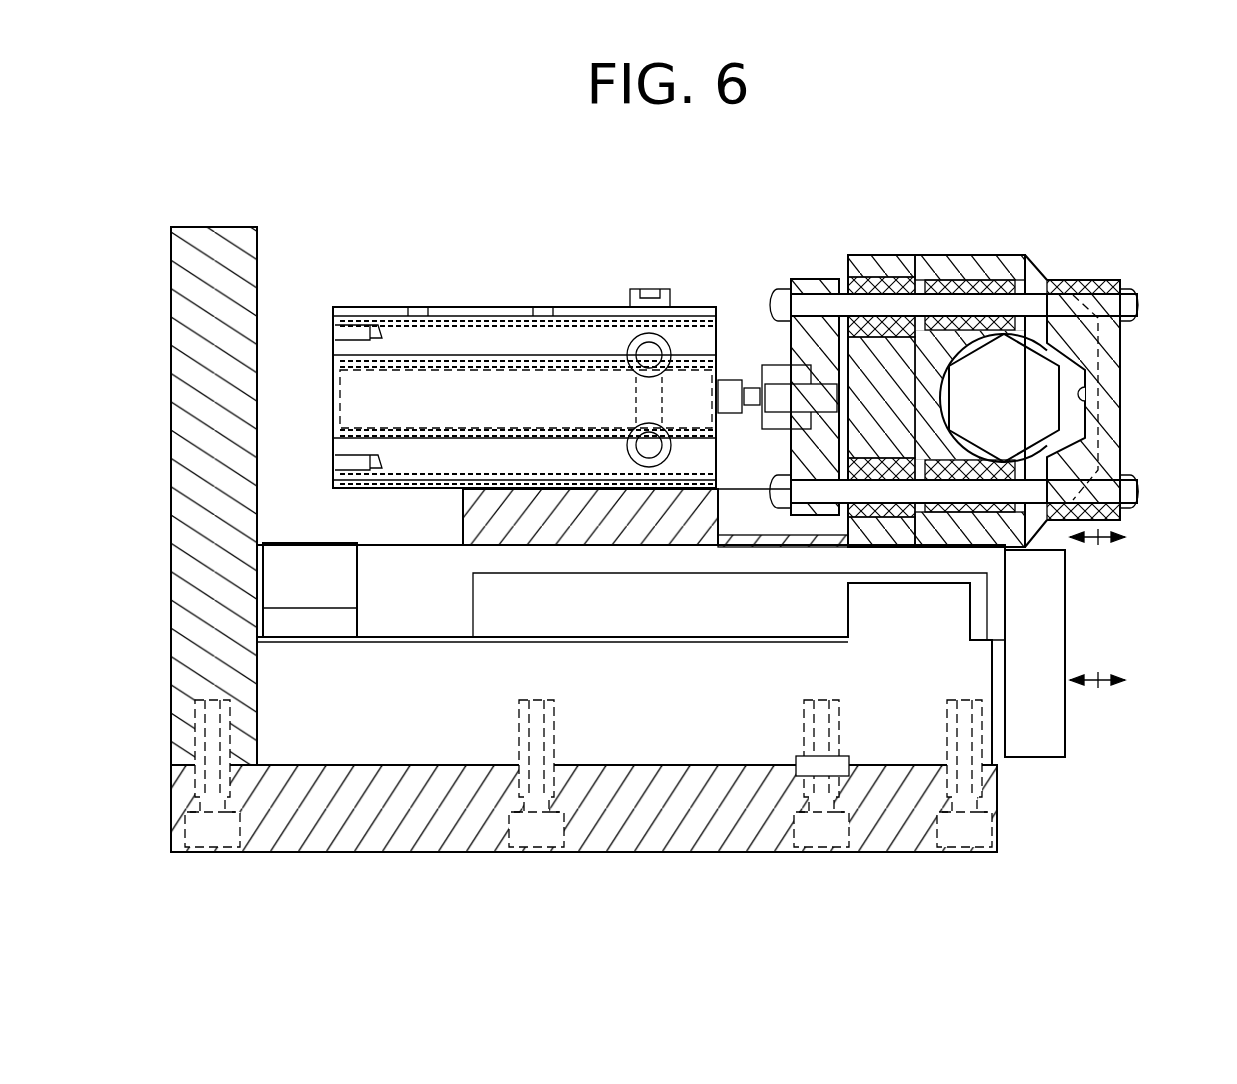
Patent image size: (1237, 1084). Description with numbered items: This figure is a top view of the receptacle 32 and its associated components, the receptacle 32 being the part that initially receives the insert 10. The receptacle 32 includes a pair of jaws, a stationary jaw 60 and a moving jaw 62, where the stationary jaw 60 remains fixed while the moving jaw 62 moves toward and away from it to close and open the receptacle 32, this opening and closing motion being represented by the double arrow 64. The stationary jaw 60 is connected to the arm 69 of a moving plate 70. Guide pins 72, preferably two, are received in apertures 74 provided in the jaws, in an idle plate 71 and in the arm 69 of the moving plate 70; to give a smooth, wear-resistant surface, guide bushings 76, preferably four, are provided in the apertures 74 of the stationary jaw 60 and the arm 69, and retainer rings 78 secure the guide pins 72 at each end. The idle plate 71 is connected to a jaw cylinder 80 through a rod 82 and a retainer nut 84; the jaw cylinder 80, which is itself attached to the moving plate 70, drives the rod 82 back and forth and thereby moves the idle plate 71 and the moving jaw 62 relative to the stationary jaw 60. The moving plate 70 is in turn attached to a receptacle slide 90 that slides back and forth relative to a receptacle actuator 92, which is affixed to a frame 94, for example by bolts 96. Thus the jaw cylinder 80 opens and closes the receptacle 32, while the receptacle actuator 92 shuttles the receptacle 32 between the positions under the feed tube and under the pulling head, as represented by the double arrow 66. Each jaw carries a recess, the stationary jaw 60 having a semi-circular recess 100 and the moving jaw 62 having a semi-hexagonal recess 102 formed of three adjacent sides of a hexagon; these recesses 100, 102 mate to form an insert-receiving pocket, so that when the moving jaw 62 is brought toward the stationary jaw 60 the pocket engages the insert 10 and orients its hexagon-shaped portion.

The insert 10 is at (1062, 437).
The receptacle 32 is at (1116, 242).
The stationary jaw 60 is at (983, 298).
The moving jaw 62 is at (1122, 380).
The double arrow 64 is at (1098, 546).
The double arrow 66 is at (1098, 688).
The arm 69 is at (791, 368).
The moving plate 70 is at (463, 521).
The idle plate 71 is at (768, 365).
The guide pins 72 is at (905, 304).
The apertures 74 is at (862, 370).
The guide bushings 76 is at (881, 280).
The retainer rings 78 is at (783, 289).
The jaw cylinder 80 is at (481, 307).
The rod 82 is at (729, 378).
The retainer nut 84 is at (746, 414).
The receptacle slide 90 is at (372, 556).
The receptacle actuator 92 is at (423, 733).
The frame 94 is at (300, 858).
The bolts 96 is at (232, 751).
The recess 100 is at (1008, 340).
The recess 102 is at (1086, 396).